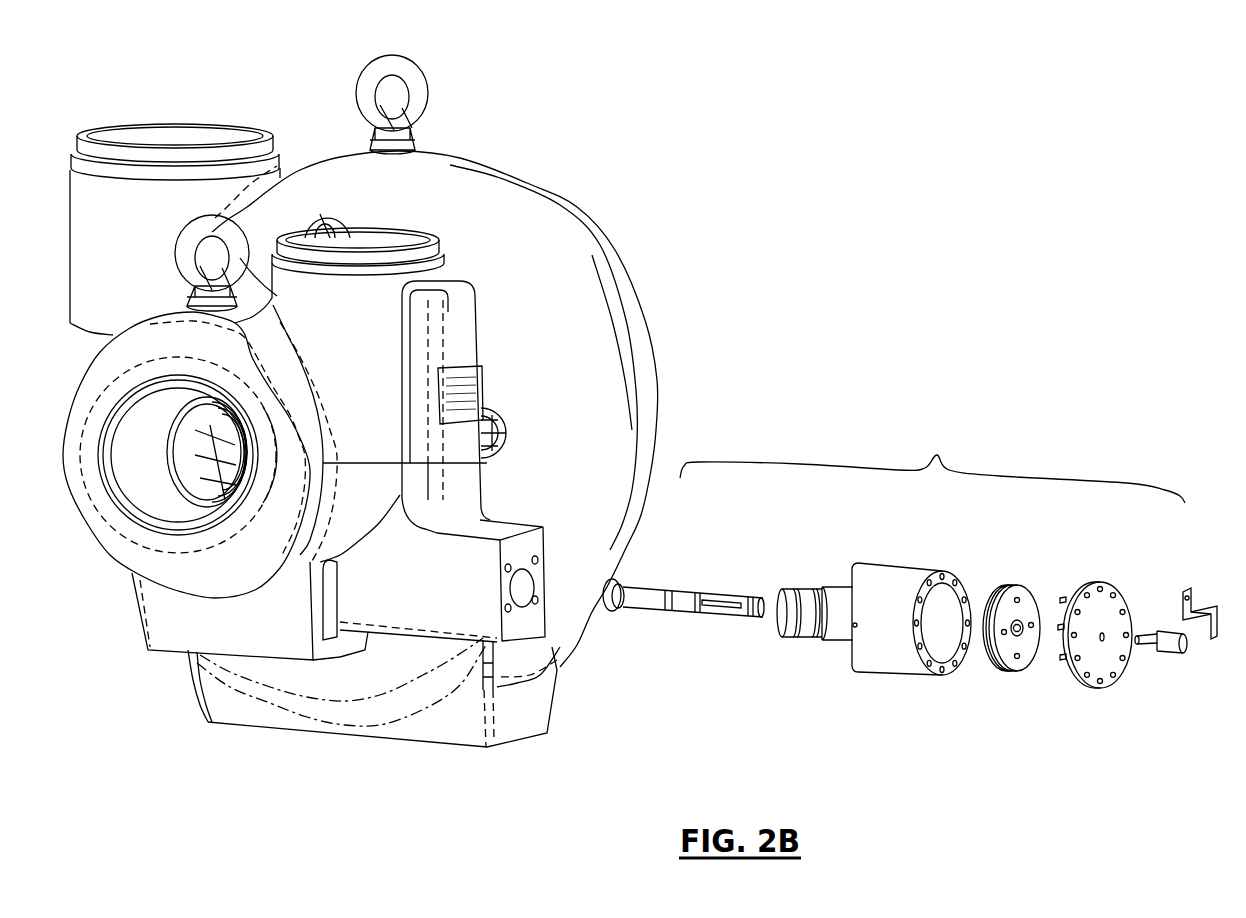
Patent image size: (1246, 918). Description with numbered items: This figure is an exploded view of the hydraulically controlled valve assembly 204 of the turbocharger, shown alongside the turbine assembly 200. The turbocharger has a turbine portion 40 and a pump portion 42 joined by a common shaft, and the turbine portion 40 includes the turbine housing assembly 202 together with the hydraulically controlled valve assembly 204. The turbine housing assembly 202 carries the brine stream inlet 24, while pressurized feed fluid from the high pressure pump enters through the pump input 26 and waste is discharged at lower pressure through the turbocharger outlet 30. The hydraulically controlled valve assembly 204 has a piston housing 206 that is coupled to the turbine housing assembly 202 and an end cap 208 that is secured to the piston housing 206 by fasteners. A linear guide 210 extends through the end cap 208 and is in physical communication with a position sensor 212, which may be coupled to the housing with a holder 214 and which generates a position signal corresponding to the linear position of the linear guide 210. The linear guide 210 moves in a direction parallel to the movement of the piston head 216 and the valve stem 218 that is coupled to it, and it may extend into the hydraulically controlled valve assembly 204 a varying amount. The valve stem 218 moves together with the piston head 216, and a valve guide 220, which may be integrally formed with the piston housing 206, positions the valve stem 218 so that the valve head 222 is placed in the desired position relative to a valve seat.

The pump input 26 is at (173, 122).
The inlet 24 is at (393, 227).
The pump portion 42 is at (555, 193).
The turbine portion 40 is at (506, 281).
The turbine housing assembly 202 is at (480, 333).
The turbocharger outlet 30 is at (138, 530).
The turbine assembly 200 is at (159, 680).
The hydraulically controlled valve assembly 204 is at (903, 588).
The piston housing 206 is at (907, 565).
The piston head 216 is at (1003, 587).
The end cap 208 is at (1100, 587).
The holder 214 is at (1205, 607).
The valve guide 220 is at (837, 590).
The valve head 222 is at (615, 613).
The valve stem 218 is at (678, 610).
The linear guide 210 is at (1150, 647).
The position sensor 212 is at (1178, 650).